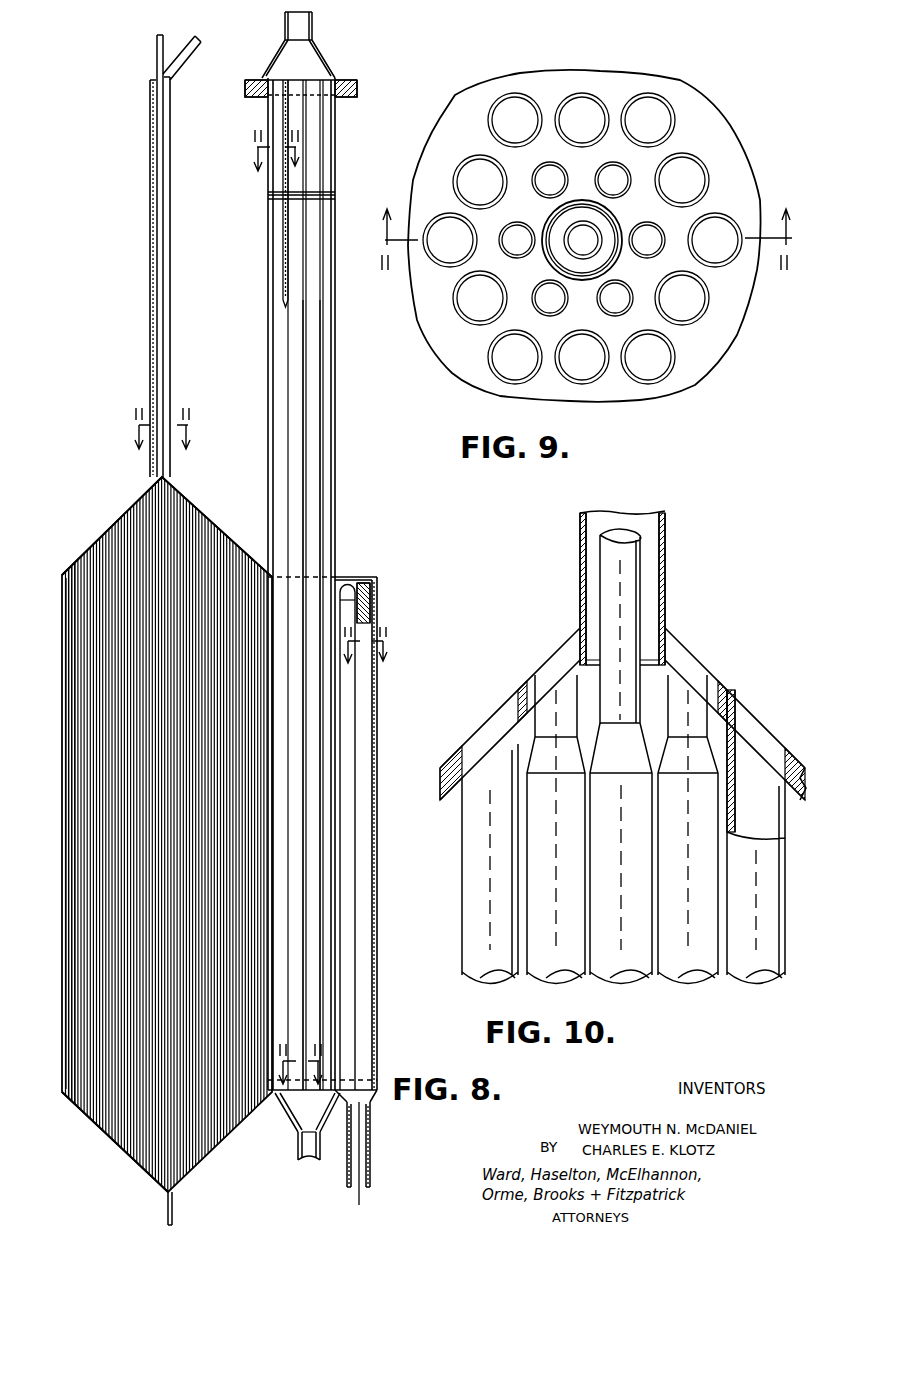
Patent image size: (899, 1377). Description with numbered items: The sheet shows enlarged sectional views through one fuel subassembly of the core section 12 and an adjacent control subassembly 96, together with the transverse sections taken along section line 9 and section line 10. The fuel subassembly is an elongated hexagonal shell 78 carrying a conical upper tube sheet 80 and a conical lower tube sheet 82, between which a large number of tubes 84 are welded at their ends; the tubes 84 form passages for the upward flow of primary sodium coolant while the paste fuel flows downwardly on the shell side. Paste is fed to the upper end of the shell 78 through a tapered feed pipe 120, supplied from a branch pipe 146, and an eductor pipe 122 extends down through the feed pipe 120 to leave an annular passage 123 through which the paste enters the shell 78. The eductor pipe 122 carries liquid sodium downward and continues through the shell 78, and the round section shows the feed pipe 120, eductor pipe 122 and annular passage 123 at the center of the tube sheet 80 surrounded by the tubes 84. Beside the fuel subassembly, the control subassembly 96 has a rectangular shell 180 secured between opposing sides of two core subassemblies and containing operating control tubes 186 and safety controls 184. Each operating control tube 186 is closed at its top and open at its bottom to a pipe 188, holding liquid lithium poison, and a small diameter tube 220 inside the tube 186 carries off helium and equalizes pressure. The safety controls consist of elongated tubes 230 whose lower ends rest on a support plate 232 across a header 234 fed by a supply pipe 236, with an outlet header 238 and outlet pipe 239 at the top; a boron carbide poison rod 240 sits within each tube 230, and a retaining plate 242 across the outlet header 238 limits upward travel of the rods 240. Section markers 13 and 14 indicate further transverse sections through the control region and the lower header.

In FIG. 8, the hexagonal shell 78 is at (64, 744).
In FIG. 8, the upper conical tube sheet 80 is at (74, 556).
In FIG. 9, the upper conical tube sheet 80 is at (625, 76).
In FIG. 10, the upper conical tube sheet 80 is at (455, 770).
In FIG. 8, the lower conical tube sheet 82 is at (97, 1115).
In FIG. 8, the tubes 84 is at (78, 604).
In FIG. 9, the tubes 84 is at (635, 175).
In FIG. 10, the tubes 84 is at (555, 965).
In FIG. 8, the control subassembly 96 is at (397, 602).
In FIG. 8, the tapered feed pipe 120 is at (150, 226).
In FIG. 9, the tapered feed pipe 120 is at (580, 198).
In FIG. 10, the tapered feed pipe 120 is at (668, 532).
In FIG. 8, the eductor pipe 122 is at (159, 262).
In FIG. 9, the eductor pipe 122 is at (600, 228).
In FIG. 10, the eductor pipe 122 is at (636, 577).
In FIG. 9, the annular passage 123 is at (565, 247).
In FIG. 10, the annular passage 123 is at (652, 606).
In FIG. 8, the branch pipe 146 is at (192, 60).
In FIG. 8, the rectangular shell 180 is at (378, 845).
In FIG. 8, the safety control 184 is at (256, 346).
In FIG. 8, the operating control tube 186 is at (345, 716).
In FIG. 8, the pipe 188 is at (372, 1152).
In FIG. 8, the small diameter tube 220 is at (363, 590).
In FIG. 8, the safety control tube 230 is at (294, 458).
In FIG. 8, the support plate 232 is at (292, 1122).
In FIG. 8, the header 234 is at (336, 1122).
In FIG. 8, the supply pipe 236 is at (302, 1162).
In FIG. 8, the outlet header 238 is at (325, 62).
In FIG. 8, the outlet pipe 239 is at (312, 28).
In FIG. 8, the poison rod 240 is at (283, 236).
In FIG. 8, the retaining plate 242 is at (283, 66).
In FIG. 8, the section line 9— 9 is at (157, 428).
In FIG. 9, the section line 10— 10 is at (582, 224).
In FIG. 8, the core section 12 is at (342, 158).
In FIG. 8, the section line 13 is at (350, 655).
In FIG. 8, the section line 14 is at (320, 1072).